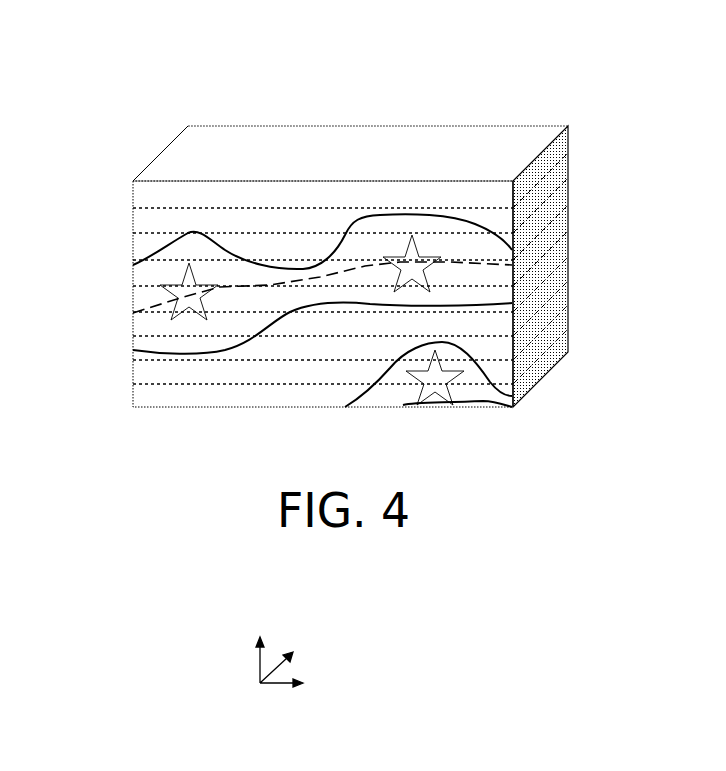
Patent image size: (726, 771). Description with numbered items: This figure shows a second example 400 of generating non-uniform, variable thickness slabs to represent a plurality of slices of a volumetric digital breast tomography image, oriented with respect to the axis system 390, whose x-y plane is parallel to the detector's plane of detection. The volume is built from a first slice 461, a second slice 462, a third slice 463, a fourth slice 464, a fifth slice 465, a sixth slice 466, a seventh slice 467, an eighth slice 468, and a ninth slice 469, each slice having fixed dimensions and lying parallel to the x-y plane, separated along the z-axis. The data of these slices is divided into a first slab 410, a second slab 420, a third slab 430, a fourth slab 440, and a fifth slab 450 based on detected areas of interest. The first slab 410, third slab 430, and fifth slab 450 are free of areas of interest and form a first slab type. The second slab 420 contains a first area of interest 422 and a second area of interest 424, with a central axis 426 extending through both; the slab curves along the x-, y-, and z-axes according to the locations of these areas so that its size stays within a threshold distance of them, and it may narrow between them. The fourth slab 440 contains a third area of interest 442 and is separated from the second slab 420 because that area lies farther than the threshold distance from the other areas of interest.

The second example 400 is at (556, 54).
The first slab 410 is at (133, 213).
The second slab 420 is at (153, 248).
The first area of interest 422 is at (189, 266).
The second area of interest 424 is at (418, 257).
The central axis 426 is at (133, 312).
The third slab 430 is at (133, 383).
The fourth slab 440 is at (373, 398).
The third area of interest 442 is at (425, 396).
The fifth slab 450 is at (492, 405).
The first slice 461 is at (568, 137).
The second slice 462 is at (568, 170).
The third slice 463 is at (568, 198).
The fourth slice 464 is at (568, 218).
The fifth slice 465 is at (568, 243).
The sixth slice 466 is at (568, 270).
The seventh slice 467 is at (568, 290).
The eighth slice 468 is at (568, 317).
The ninth slice 469 is at (568, 340).
The axis system 390 is at (331, 603).